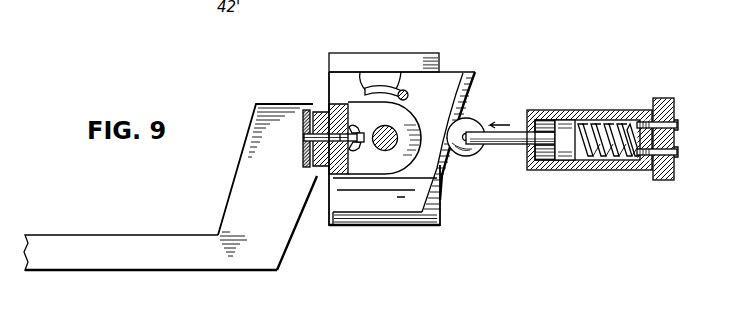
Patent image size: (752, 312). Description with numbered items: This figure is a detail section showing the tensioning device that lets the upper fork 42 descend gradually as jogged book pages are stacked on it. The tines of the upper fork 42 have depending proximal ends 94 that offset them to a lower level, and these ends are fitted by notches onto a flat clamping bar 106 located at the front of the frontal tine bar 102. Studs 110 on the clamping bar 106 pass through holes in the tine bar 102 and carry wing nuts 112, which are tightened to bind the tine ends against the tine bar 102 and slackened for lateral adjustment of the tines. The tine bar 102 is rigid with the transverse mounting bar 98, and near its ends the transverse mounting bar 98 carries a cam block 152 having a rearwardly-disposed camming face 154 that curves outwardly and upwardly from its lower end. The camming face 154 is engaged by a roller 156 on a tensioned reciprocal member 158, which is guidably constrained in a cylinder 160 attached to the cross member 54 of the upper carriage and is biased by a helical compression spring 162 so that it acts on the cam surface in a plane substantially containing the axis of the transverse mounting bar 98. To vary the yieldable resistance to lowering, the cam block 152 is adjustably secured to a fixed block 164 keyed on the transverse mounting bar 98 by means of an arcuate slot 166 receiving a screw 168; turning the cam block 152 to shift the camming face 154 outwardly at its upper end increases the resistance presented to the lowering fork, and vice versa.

The upper fork 42 is at (221, 200).
The depending proximal ends 94 is at (250, 171).
The frontal tine bar 102 is at (328, 106).
The clamping bar 106 is at (303, 152).
The studs 110 is at (338, 142).
The wing nuts 112 is at (360, 131).
The transverse mounting bar 98 is at (392, 127).
The cam blocks 152 is at (452, 80).
The camming faces 154 is at (478, 80).
The rollers 156 is at (474, 119).
The reciprocal members 158 is at (512, 145).
The cylinders 160 is at (574, 110).
The helical compression springs 162 is at (600, 152).
The fixed blocks 164 is at (397, 60).
The arcuate slot 166 is at (362, 73).
The screw 168 is at (407, 90).
The cross member 54 is at (661, 99).